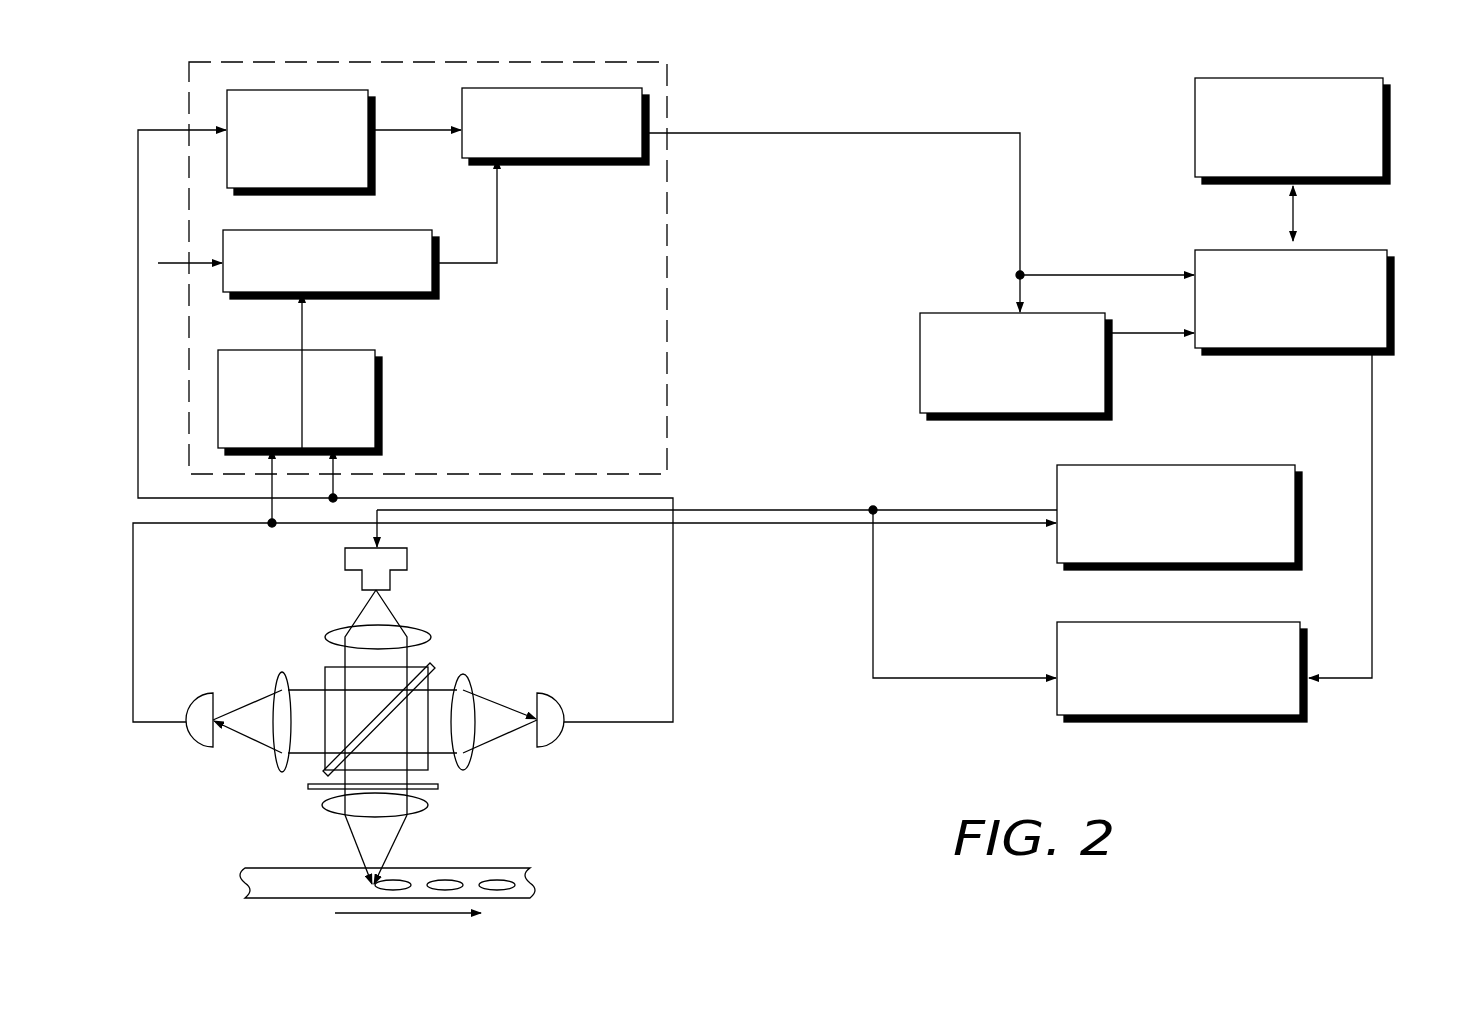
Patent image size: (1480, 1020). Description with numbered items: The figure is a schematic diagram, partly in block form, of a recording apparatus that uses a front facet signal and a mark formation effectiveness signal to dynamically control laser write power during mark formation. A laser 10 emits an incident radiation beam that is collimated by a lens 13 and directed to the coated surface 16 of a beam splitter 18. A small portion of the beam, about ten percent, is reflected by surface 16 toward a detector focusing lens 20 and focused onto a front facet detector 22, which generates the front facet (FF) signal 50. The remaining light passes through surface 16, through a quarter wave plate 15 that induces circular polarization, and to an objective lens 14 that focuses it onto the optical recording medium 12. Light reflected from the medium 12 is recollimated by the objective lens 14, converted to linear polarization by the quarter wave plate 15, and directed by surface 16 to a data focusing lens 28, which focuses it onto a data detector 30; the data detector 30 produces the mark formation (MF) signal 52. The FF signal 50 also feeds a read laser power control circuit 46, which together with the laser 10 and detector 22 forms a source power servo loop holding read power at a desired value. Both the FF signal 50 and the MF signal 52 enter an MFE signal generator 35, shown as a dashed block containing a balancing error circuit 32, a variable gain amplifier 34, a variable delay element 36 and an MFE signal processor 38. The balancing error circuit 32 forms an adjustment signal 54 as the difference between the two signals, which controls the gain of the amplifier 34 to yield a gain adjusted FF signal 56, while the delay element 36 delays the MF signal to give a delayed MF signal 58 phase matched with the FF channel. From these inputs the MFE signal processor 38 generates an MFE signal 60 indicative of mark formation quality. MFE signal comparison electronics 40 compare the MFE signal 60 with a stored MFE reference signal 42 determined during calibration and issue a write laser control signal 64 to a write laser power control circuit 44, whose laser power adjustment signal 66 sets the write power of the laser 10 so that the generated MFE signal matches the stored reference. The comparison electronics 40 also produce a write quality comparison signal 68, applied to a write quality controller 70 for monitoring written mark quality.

The optical source 10 is at (407, 552).
The optical recording medium 12 is at (533, 870).
The lens 13 is at (413, 628).
The objective lens 14 is at (430, 810).
The quarter wave plate 15 is at (315, 789).
The surface 16 is at (430, 665).
The beam splitter 18 is at (325, 668).
The detector focusing lens 20 is at (278, 683).
The front facet detector 22 is at (200, 745).
The data focusing lens 28 is at (468, 762).
The data detector 30 is at (565, 730).
The balancing error circuit 32 is at (375, 385).
The variable gain amplifier 34 is at (387, 230).
The MFE signal generator 35 is at (670, 87).
The variable delay element 36 is at (368, 148).
The MFE signal processor 38 is at (587, 158).
The MFE signal comparison electronics 40 is at (1395, 267).
The stored MFE reference signal 42 is at (920, 358).
The write laser power control circuit 44 is at (1057, 660).
The read laser power control circuit 46 is at (1162, 467).
The front facet signal 50 is at (133, 612).
The mark formation signal 52 is at (673, 685).
The adjustment signal 54 is at (302, 325).
The gain adjusted FF signal 56 is at (497, 213).
The delayed MF signal 58 is at (393, 129).
The MFE signal 60 is at (925, 133).
The write laser control signal 64 is at (1372, 432).
The laser power adjustment signal 66 is at (767, 510).
The write quality comparison signal 68 is at (1293, 223).
The write quality controller 70 is at (1195, 150).